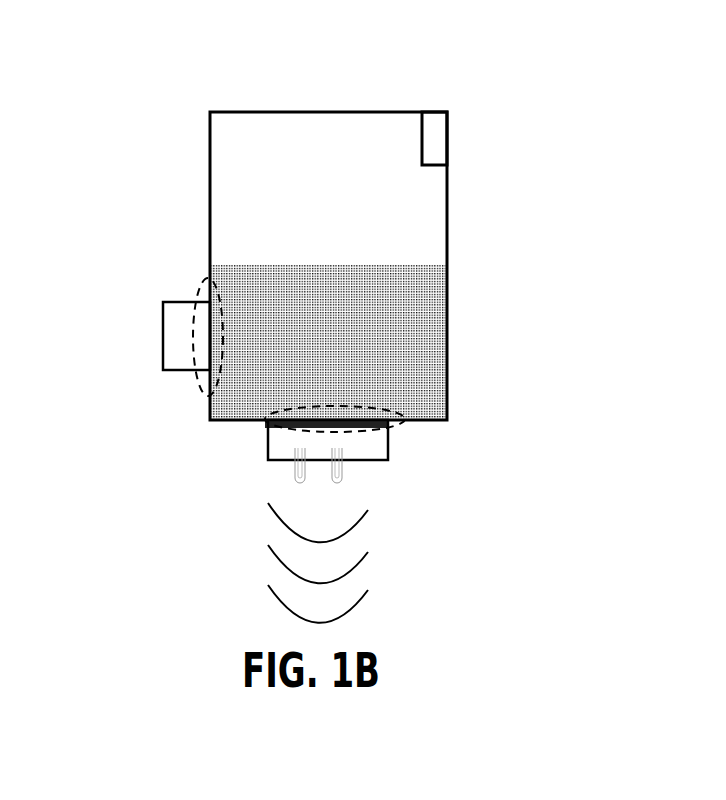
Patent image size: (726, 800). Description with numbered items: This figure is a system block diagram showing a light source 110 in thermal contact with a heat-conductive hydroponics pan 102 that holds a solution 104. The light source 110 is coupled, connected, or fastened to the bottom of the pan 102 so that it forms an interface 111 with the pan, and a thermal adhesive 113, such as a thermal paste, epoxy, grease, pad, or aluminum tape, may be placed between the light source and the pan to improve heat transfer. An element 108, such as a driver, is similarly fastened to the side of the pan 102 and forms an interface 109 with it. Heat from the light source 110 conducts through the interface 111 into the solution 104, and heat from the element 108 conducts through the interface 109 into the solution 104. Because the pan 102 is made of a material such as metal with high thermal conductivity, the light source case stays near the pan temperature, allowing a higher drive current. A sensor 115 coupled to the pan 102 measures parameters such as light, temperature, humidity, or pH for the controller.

The hydroponics pan 102 is at (208, 168).
The solution 104 is at (398, 353).
The element 108 is at (163, 338).
The interface 109 is at (200, 378).
The light source 110 is at (266, 440).
The interface 111 is at (367, 430).
The thermal adhesive 113 is at (262, 423).
The sensor 115 is at (430, 111).